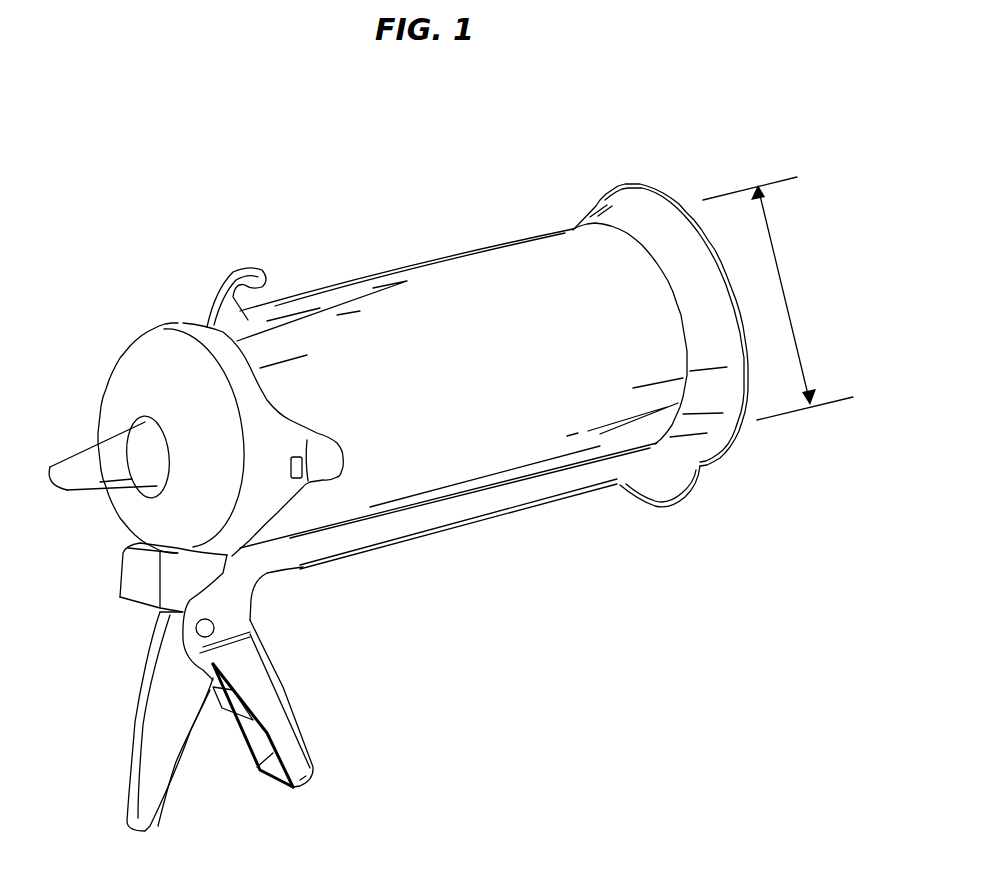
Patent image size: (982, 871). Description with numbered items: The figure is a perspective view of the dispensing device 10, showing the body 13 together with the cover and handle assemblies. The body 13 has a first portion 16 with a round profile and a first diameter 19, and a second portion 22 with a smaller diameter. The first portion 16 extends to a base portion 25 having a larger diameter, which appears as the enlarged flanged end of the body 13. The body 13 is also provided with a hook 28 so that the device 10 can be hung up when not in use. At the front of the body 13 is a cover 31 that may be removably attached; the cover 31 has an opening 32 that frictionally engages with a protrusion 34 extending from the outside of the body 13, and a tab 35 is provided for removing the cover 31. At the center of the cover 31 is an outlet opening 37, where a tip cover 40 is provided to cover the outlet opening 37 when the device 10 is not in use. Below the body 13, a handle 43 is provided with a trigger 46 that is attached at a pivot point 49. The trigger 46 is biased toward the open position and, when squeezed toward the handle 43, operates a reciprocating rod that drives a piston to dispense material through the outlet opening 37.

The dispensing device 10 is at (703, 133).
The body 13 is at (531, 205).
The first portion 16 is at (514, 257).
The first diameter 19 is at (778, 287).
The second portion 22 is at (508, 498).
The base portion 25 is at (704, 283).
The hook 28 is at (258, 276).
The cover 31 is at (128, 352).
The opening 32 is at (290, 462).
The protrusion 34 is at (298, 455).
The tab 35 is at (328, 447).
The outlet opening 37 is at (84, 418).
The tip cover 40 is at (72, 468).
The handle 43 is at (290, 720).
The trigger 46 is at (142, 729).
The pivot point 49 is at (203, 628).